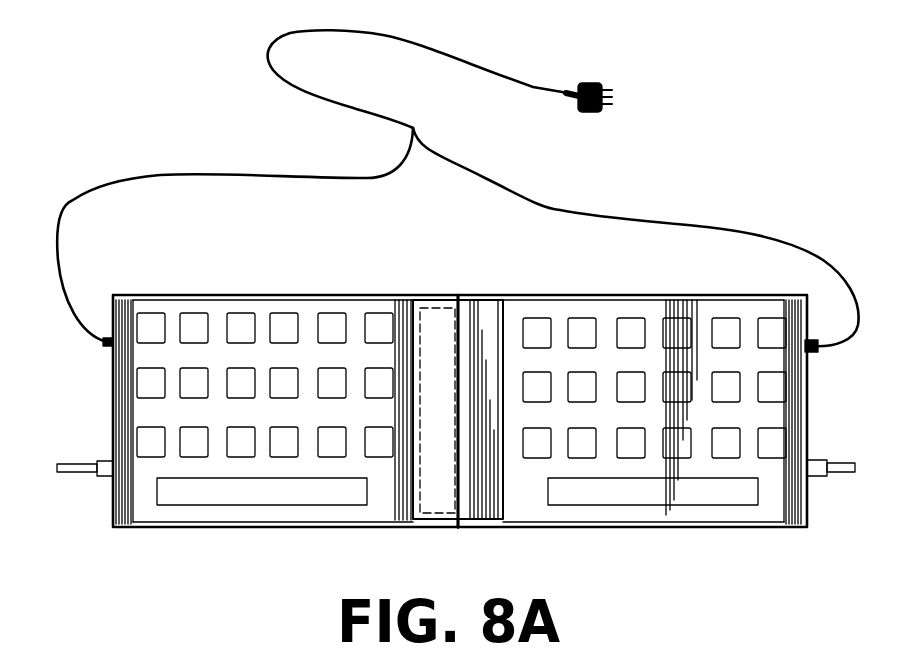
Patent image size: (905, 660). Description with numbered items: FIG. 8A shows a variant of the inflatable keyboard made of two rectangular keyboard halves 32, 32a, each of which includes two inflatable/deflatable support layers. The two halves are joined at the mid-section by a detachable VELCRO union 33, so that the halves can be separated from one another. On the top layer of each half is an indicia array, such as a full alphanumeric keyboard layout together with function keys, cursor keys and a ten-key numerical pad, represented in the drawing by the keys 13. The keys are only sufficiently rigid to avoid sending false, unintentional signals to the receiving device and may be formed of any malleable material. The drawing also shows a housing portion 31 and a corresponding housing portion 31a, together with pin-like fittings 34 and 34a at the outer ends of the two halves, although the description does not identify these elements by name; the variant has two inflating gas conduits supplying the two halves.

The key 13 is at (242, 322).
The left panel housing 31 is at (182, 528).
The right panel housing 31a is at (743, 528).
The rectangular keyboard half 32 is at (240, 493).
The rectangular keyboard half 32a is at (627, 495).
The VELCRO union 33 is at (472, 312).
The left connector pin 34 is at (65, 472).
The right connector pin 34a is at (833, 473).